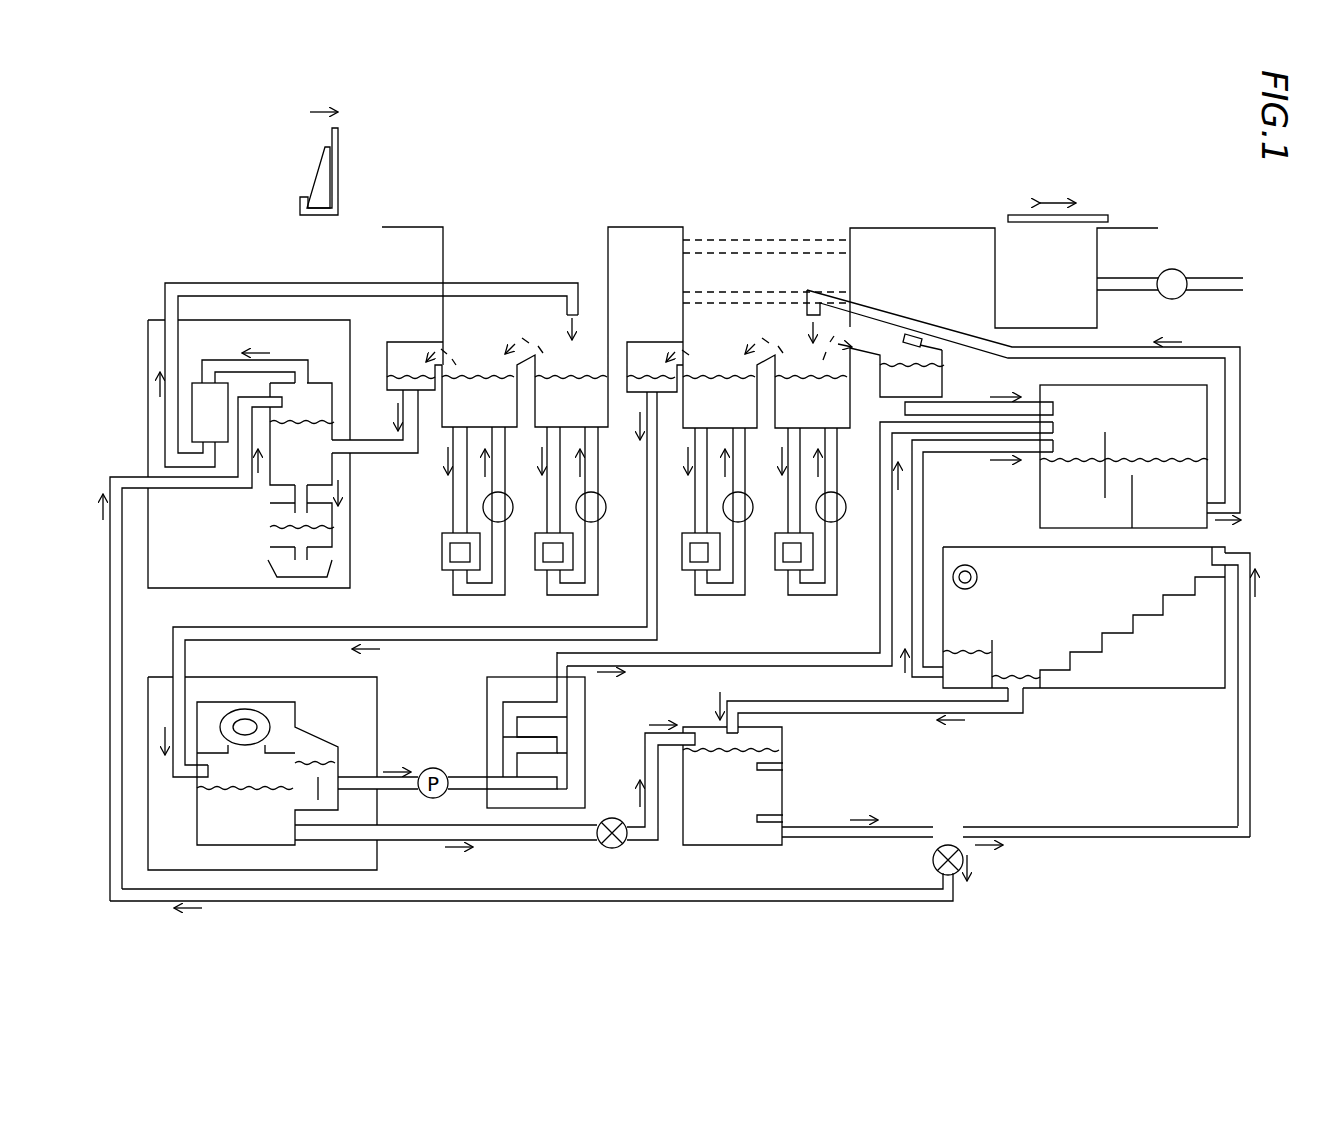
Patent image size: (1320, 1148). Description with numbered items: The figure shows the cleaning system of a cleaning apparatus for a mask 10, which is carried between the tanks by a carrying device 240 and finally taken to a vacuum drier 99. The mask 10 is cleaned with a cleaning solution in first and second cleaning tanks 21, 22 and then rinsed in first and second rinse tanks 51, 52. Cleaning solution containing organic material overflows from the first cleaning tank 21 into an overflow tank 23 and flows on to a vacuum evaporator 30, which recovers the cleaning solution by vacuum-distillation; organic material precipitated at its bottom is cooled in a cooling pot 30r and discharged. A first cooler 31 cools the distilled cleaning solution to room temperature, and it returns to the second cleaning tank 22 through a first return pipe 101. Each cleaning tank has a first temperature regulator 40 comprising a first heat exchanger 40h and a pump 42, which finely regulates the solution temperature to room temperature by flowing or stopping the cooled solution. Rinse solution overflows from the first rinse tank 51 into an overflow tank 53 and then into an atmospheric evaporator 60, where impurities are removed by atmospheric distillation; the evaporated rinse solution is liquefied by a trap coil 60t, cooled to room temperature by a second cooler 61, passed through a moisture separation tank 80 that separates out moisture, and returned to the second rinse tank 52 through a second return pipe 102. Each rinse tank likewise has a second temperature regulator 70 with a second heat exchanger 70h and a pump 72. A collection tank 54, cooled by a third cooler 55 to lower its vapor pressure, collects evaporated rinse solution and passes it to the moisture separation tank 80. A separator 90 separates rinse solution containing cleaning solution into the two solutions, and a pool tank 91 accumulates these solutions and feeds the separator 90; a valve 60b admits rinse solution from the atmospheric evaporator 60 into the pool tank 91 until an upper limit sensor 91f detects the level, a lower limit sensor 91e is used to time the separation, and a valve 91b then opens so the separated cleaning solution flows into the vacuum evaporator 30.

The mask 10 is at (313, 176).
The carrying device 240 is at (340, 166).
The first return pipe 101 is at (268, 279).
The first cooler 31 is at (193, 382).
The vacuum evaporator 30 is at (330, 467).
The cooling pot 30r is at (270, 530).
The overflow tank 23 is at (399, 340).
The first cleaning tank 21 is at (476, 364).
The second cleaning tank 22 is at (588, 362).
The overflow tank 53 is at (648, 338).
The first rinse tank 51 is at (713, 356).
The second rinse tank 52 is at (786, 356).
The first temperature regulator 40 is at (442, 550).
The first heat exchanger 40h is at (467, 557).
The pump 42 is at (513, 502).
The second temperature regulator 70 is at (682, 550).
The second heat exchanger 70h is at (707, 557).
The pump 72 is at (753, 502).
The second return pipe 102 is at (889, 306).
The vacuum drier 99 is at (1102, 312).
The third cooler 55 is at (942, 350).
The collection tank 54 is at (880, 398).
The moisture separation tank 80 is at (1040, 508).
The separator 90 is at (1112, 690).
The second cooler 61 is at (487, 706).
The trap coil 60t is at (270, 722).
The atmospheric evaporator 60 is at (207, 820).
The valve 60b is at (612, 848).
The pool tank 91 is at (782, 795).
The upper limit sensor 91f is at (785, 767).
The lower limit sensor 91e is at (785, 824).
The valve 91b is at (955, 874).